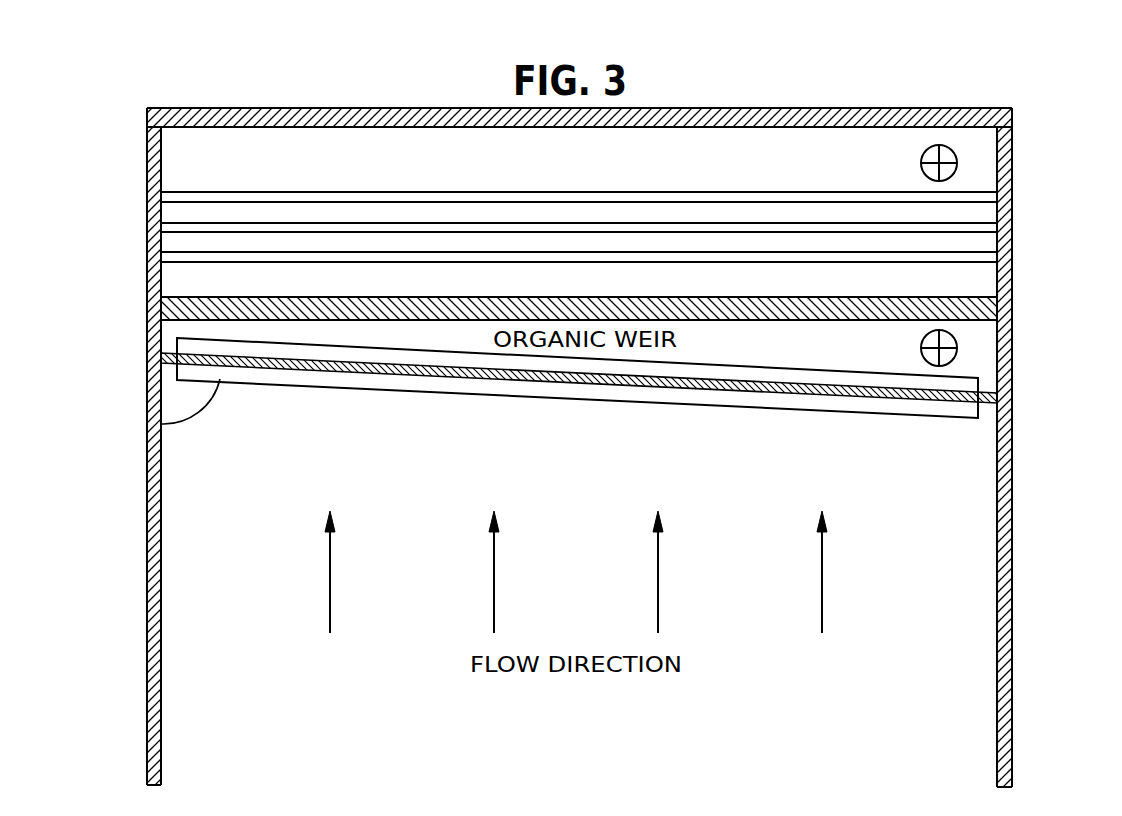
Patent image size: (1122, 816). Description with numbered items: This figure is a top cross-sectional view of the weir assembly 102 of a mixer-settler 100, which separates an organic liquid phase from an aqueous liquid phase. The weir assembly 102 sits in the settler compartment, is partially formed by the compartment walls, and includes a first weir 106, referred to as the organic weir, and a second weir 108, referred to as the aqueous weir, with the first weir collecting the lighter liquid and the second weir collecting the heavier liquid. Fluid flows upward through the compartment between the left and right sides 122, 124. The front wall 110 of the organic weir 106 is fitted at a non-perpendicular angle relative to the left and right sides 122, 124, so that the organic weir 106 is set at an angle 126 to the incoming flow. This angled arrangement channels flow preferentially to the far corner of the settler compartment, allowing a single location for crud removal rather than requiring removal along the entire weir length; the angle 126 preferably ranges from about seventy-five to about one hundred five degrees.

The mixer-settler 100 is at (940, 92).
The weir assembly 102 is at (130, 229).
The first weir 106 is at (980, 354).
The second weir 108 is at (980, 154).
The front wall 110 is at (190, 368).
The left side 122 is at (147, 510).
The right side 124 is at (1012, 533).
The angle 126 is at (187, 425).